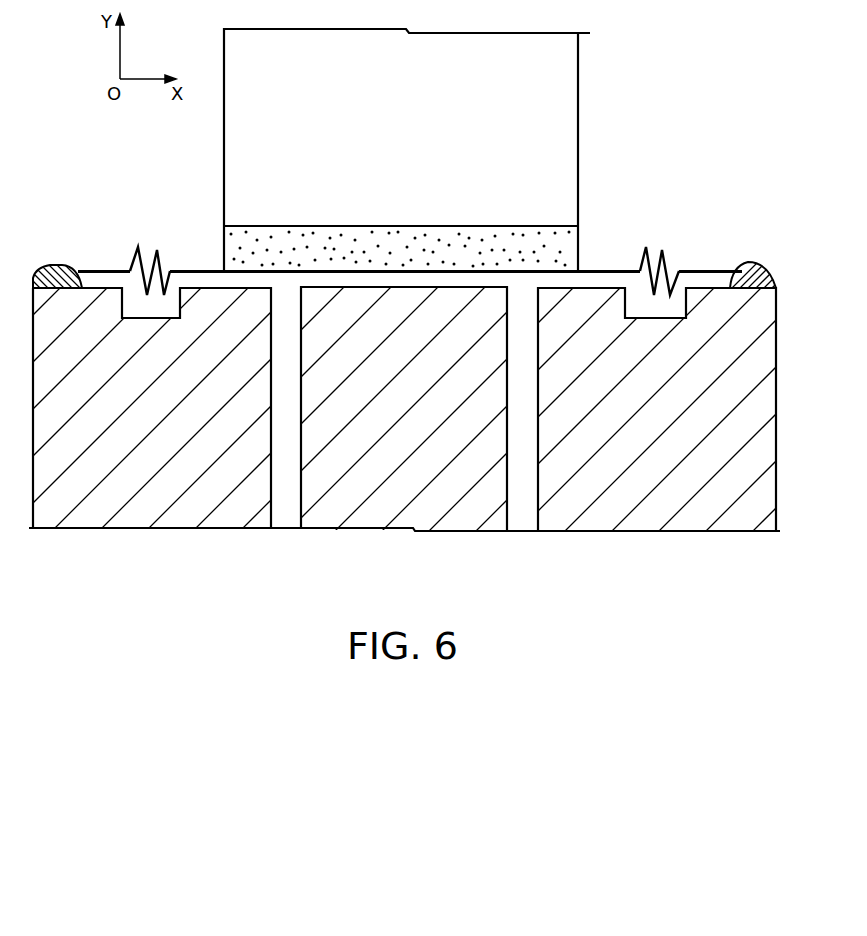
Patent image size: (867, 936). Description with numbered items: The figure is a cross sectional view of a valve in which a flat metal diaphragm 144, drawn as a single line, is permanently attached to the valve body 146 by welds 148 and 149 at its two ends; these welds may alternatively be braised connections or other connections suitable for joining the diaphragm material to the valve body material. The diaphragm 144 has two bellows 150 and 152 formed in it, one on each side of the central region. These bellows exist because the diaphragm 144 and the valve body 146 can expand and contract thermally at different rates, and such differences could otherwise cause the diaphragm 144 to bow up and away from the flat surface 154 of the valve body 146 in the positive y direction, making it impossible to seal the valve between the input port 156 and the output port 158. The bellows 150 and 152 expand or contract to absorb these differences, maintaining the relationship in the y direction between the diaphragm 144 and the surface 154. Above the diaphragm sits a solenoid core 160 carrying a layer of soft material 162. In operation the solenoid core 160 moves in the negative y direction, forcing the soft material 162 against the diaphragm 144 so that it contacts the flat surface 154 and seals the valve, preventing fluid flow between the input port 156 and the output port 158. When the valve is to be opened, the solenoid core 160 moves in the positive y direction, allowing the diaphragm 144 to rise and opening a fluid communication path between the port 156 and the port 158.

The diaphragm 144 is at (703, 270).
The valve body 146 is at (716, 512).
The weld 148 is at (745, 262).
The weld 149 is at (56, 265).
The bellows 150 is at (153, 253).
The bellows 152 is at (662, 250).
The flat surface 154 is at (232, 290).
The input port 156 is at (288, 437).
The output port 158 is at (528, 437).
The solenoid core 160 is at (382, 147).
The soft material 162 is at (330, 237).